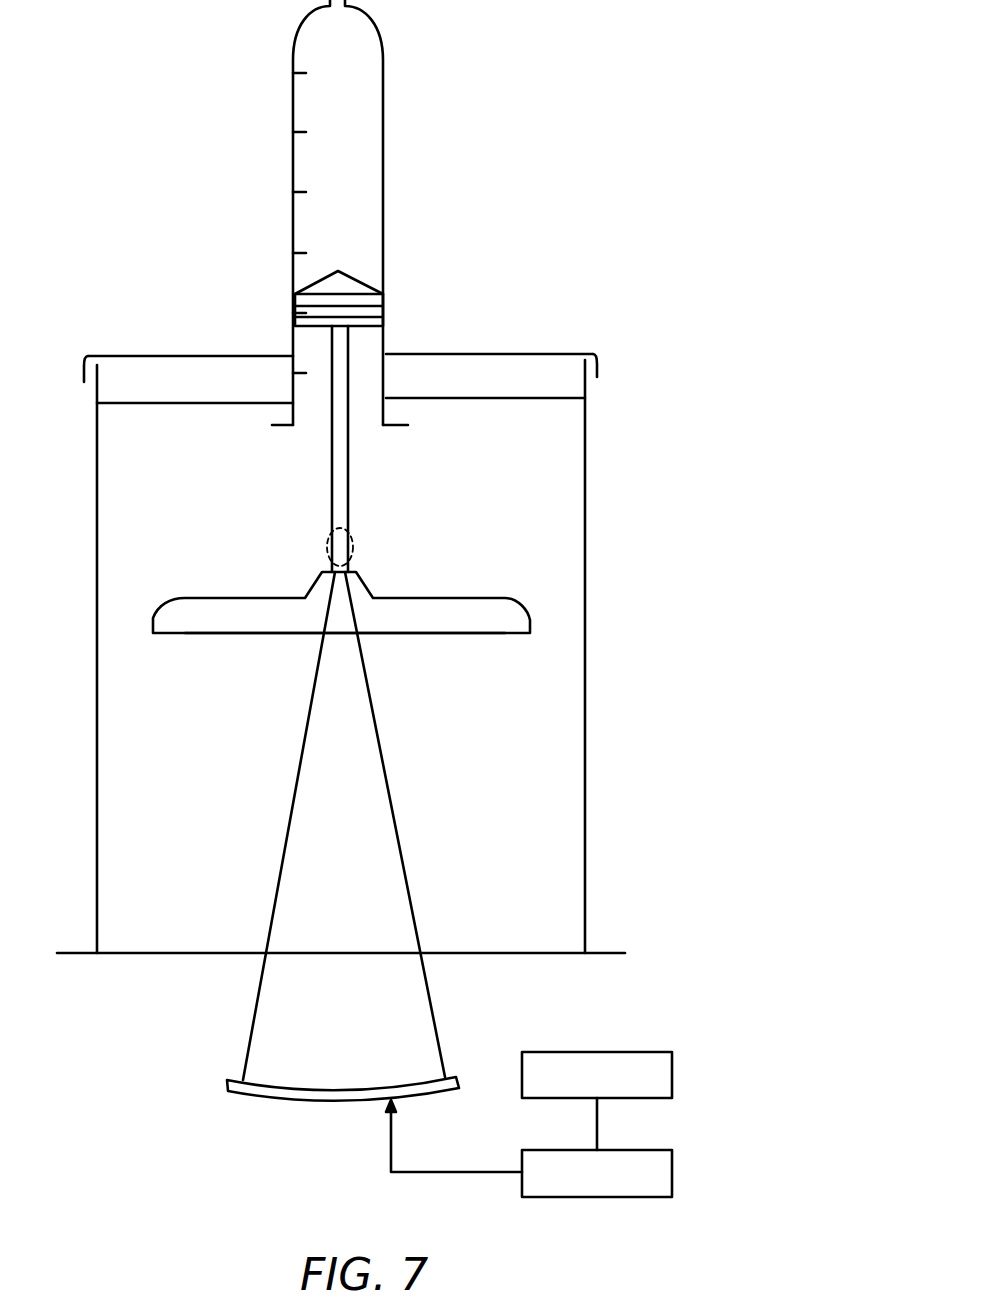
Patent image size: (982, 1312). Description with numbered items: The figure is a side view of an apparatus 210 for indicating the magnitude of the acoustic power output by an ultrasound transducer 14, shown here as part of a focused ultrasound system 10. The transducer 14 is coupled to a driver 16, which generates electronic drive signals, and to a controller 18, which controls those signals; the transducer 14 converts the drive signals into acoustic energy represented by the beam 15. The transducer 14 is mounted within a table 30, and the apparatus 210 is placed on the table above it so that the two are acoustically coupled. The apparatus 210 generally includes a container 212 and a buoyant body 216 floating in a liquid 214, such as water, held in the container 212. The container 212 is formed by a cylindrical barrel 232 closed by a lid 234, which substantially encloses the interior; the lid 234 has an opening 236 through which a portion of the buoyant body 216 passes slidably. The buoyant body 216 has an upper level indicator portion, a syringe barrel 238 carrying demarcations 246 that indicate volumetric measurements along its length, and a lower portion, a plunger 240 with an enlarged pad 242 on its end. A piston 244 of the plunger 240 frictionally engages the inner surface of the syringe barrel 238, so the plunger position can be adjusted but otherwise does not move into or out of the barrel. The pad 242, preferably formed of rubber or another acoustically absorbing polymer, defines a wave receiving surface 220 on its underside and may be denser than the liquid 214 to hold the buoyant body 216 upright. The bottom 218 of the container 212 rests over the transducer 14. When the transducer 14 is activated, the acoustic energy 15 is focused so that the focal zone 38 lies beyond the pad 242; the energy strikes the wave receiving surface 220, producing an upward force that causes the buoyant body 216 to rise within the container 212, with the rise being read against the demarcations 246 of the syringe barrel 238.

The focused ultrasound system 10 is at (549, 1002).
The ultrasound transducer 14 is at (242, 1097).
The acoustic energy beam 15 is at (435, 1015).
The driver 16 is at (543, 1150).
The controller 18 is at (672, 1072).
The table 30 is at (600, 952).
The focal zone 38 is at (352, 538).
The apparatus 210 is at (615, 318).
The container 212 is at (87, 488).
The liquid 214 is at (140, 573).
The buoyant body 216 is at (283, 216).
The tank bottom 218 is at (128, 952).
The wave receiving surface 220 is at (222, 638).
The cylindrical barrel 232 is at (587, 690).
The lid 234 is at (597, 365).
The opening 236 is at (388, 350).
The syringe barrel 238 is at (386, 110).
The plunger 240 is at (350, 487).
The pad 242 is at (525, 603).
The piston 244 is at (358, 290).
The demarcations 246 is at (303, 85).